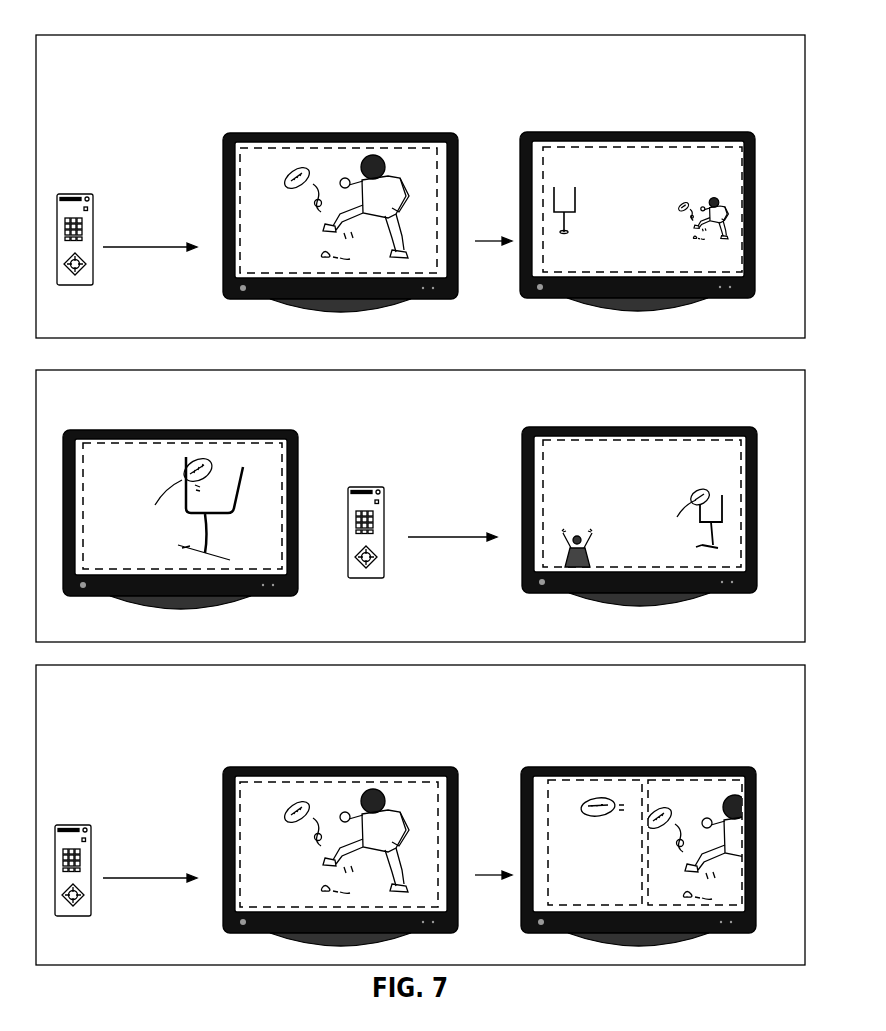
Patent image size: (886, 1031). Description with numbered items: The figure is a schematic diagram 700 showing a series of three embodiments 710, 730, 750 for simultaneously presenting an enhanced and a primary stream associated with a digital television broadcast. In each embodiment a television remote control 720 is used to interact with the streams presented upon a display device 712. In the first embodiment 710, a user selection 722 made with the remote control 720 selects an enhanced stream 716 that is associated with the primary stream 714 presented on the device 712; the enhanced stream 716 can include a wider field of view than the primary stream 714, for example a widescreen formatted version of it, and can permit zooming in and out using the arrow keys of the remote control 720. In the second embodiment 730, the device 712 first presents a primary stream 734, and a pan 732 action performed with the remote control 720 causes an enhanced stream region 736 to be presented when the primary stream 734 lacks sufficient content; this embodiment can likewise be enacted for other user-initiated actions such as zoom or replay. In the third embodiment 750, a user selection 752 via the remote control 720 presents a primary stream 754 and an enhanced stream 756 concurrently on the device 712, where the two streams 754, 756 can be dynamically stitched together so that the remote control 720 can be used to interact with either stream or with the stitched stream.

The series of embodiments 700 is at (800, 20).
The embodiment 710 is at (792, 66).
The device 712 is at (280, 134).
The primary stream 714 is at (352, 148).
The enhanced stream 716 is at (628, 147).
The television remote control 720 is at (73, 825).
The user selection 722 is at (150, 216).
The embodiment 730 is at (792, 400).
The pan 732 is at (452, 517).
The primary stream 734 is at (172, 443).
The enhanced stream region 736 is at (630, 441).
The embodiment 750 is at (793, 686).
The user selection 752 is at (150, 846).
The primary stream 754 is at (698, 753).
The enhanced stream 756 is at (605, 781).